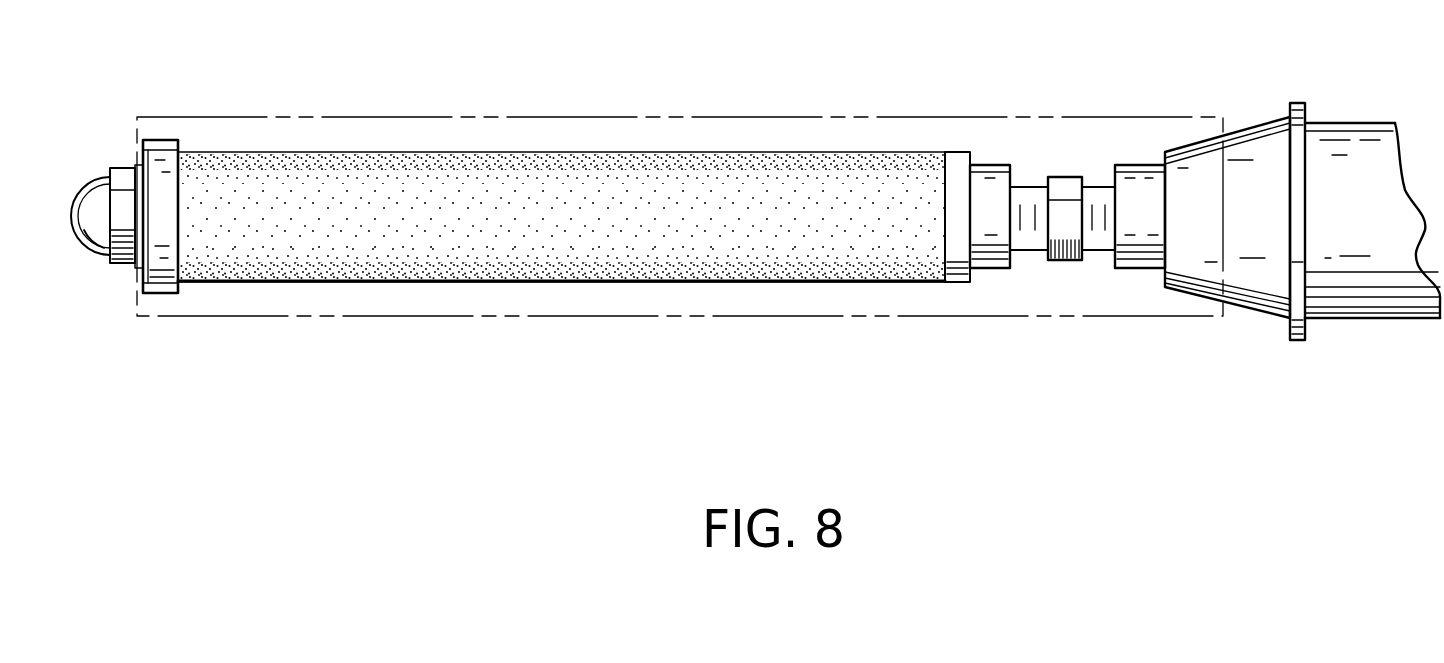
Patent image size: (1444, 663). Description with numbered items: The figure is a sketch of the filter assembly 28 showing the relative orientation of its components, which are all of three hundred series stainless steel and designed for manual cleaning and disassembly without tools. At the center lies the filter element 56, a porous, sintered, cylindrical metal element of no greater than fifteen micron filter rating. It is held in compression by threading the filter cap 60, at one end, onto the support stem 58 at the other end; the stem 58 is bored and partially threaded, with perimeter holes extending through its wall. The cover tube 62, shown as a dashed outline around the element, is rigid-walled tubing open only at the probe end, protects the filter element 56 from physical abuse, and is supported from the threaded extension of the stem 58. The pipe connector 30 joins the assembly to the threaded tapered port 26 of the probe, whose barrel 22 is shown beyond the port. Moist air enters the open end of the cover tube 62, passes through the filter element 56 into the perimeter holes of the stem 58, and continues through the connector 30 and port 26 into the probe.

The probe barrel 22 is at (1362, 320).
The tapered port 26 is at (1243, 128).
The filter assembly 28 is at (630, 70).
The pipe connector 30 is at (1065, 177).
The filter element 56 is at (555, 284).
The support stem 58 is at (997, 270).
The filter cap 60 is at (163, 295).
The cover tube 62 is at (257, 117).